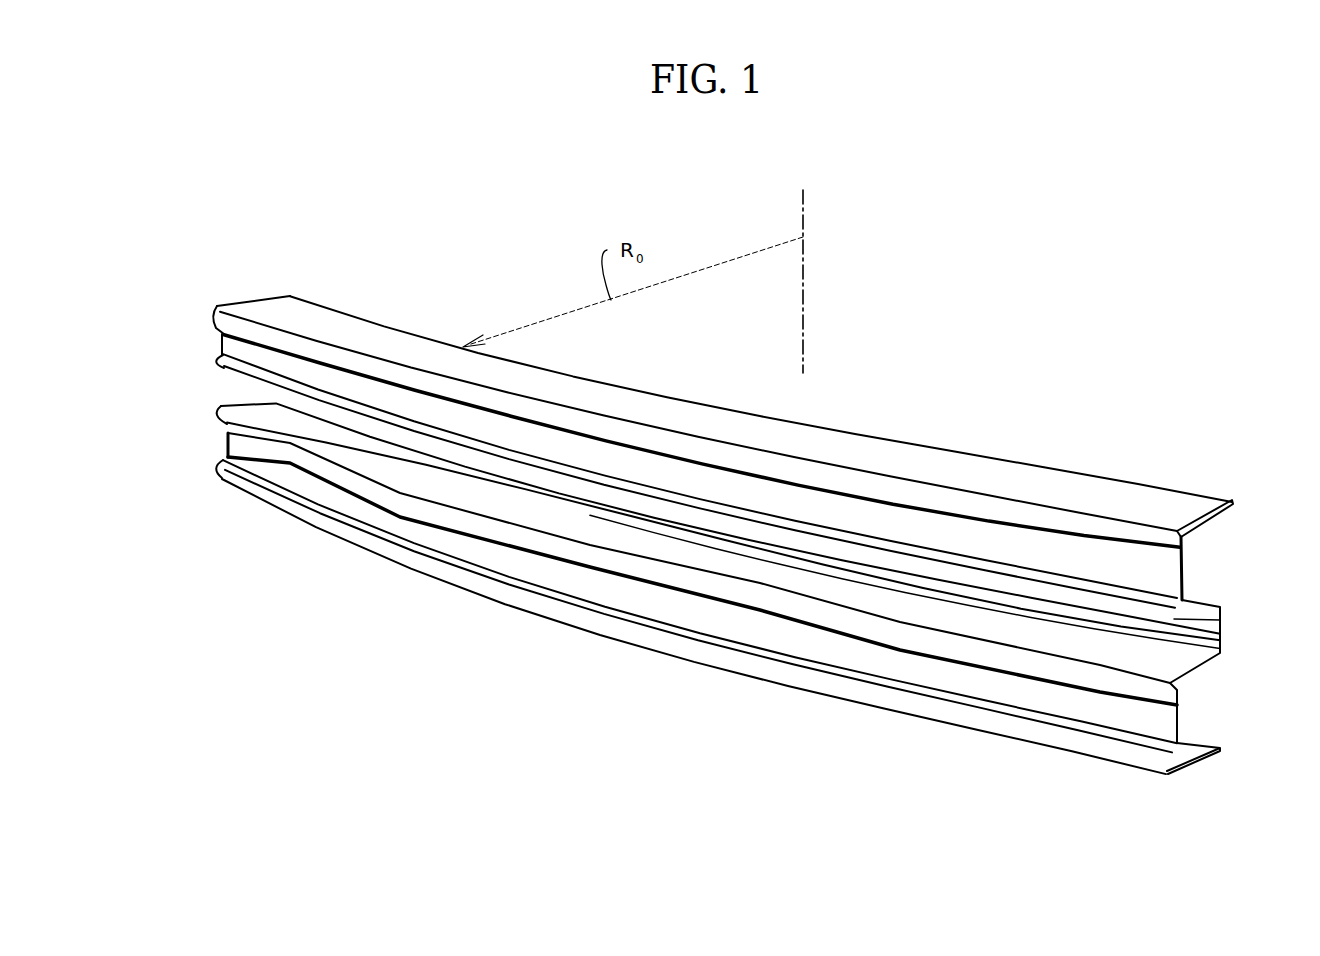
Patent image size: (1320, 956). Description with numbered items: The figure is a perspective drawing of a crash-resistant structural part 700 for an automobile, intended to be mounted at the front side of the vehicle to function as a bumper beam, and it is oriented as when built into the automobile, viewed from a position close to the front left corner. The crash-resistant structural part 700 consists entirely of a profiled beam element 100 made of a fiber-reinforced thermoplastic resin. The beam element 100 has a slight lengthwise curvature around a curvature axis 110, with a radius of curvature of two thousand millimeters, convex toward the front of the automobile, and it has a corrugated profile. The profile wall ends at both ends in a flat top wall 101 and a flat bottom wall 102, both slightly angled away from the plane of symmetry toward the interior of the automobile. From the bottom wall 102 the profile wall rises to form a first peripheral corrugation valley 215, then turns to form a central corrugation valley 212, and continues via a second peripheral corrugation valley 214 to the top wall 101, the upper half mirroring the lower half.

The profiled beam element 100 is at (446, 577).
The top wall 101 is at (1213, 522).
The bottom wall 102 is at (1205, 762).
The curvature axis 110 is at (806, 318).
The central corrugation valley 212 is at (220, 390).
The second peripheral corrugation valley 214 is at (206, 348).
The first peripheral corrugation valley 215 is at (215, 434).
The crash-resistant structural part 700 is at (987, 338).